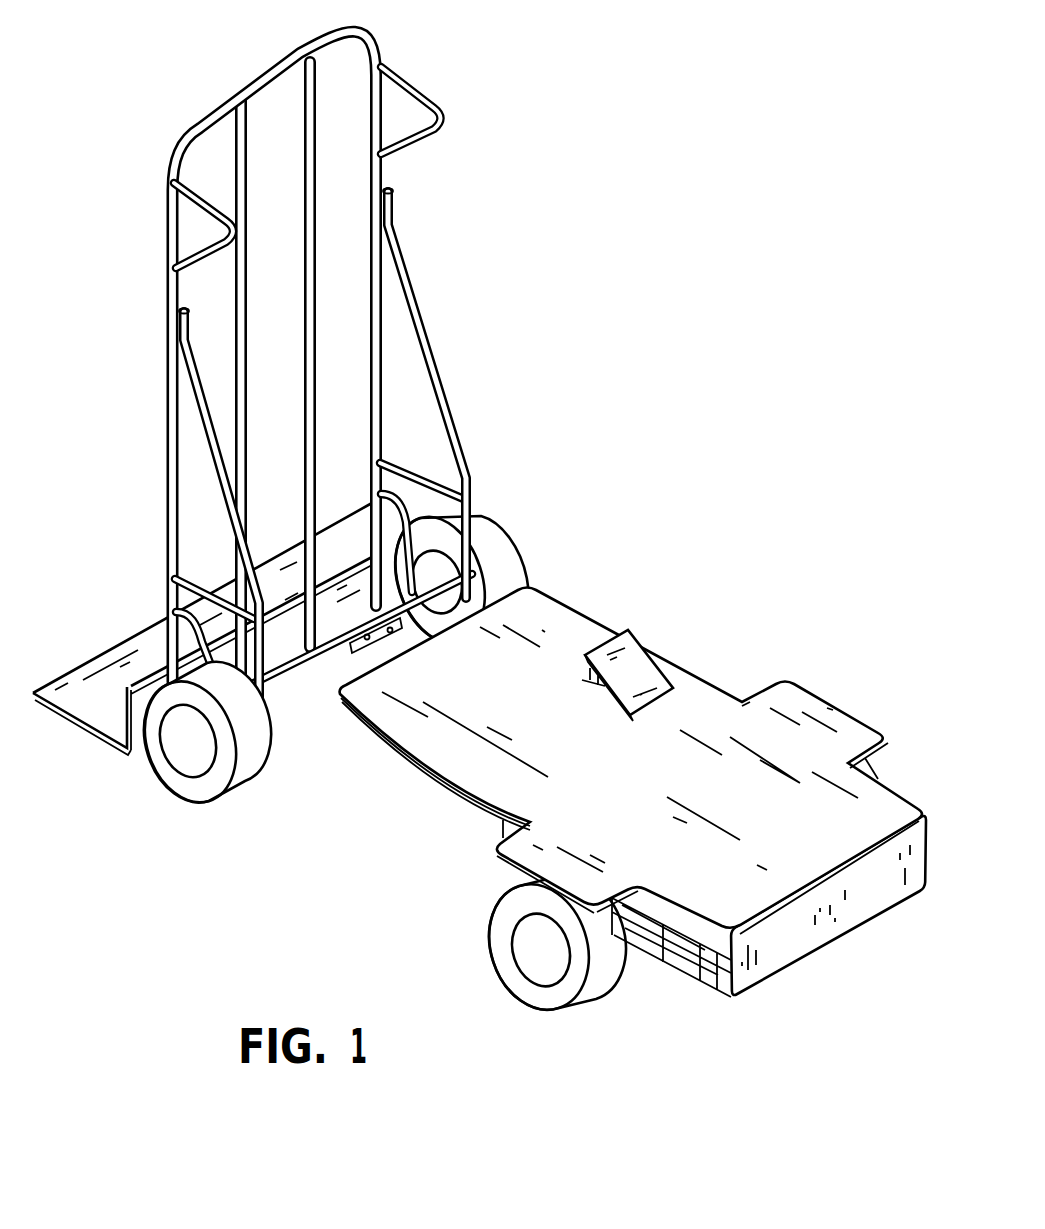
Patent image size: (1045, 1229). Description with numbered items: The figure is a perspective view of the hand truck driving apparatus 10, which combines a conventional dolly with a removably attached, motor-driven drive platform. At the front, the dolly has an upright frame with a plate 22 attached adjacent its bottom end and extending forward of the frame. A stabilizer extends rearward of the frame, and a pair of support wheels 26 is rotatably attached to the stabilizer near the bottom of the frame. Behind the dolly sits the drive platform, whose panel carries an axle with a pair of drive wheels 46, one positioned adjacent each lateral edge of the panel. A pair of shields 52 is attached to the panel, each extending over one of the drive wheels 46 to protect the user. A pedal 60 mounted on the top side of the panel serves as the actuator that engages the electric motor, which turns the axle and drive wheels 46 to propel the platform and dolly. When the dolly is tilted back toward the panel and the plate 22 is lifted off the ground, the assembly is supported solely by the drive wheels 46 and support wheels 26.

The hand truck driving apparatus 10 is at (598, 227).
The plate 22 is at (93, 672).
The support wheels 26 is at (242, 793).
The drive wheels 46 is at (597, 997).
The shields 52 is at (810, 703).
The pedal 60 is at (641, 668).